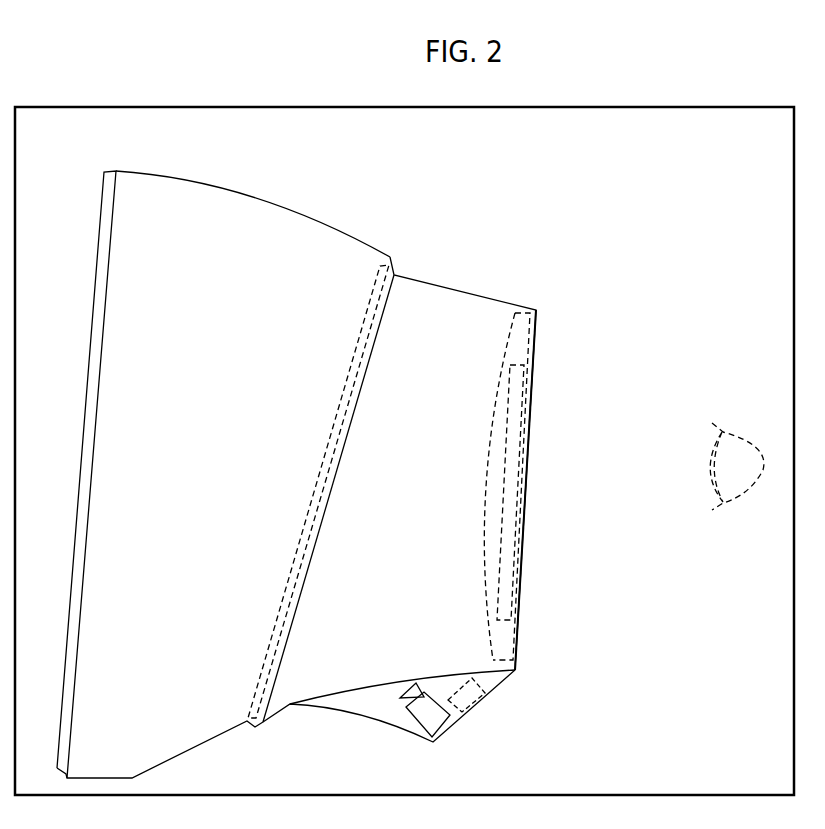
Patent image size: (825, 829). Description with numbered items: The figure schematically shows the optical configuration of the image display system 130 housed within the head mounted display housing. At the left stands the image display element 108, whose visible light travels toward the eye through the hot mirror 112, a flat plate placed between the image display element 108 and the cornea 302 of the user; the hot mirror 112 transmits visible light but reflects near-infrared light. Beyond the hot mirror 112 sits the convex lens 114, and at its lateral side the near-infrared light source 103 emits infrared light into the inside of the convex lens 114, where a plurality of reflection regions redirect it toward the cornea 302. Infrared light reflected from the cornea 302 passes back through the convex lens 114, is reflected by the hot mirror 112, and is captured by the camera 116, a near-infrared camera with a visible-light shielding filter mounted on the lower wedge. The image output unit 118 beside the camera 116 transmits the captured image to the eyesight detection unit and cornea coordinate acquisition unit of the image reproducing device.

The image display element 108 is at (113, 170).
The image display system 130 is at (272, 202).
The hot mirror 112 is at (390, 256).
The convex lens 114 is at (526, 311).
The near-infrared light source 103 is at (513, 577).
The camera 116 is at (447, 720).
The image output unit 118 is at (484, 694).
The cornea 302 is at (707, 517).